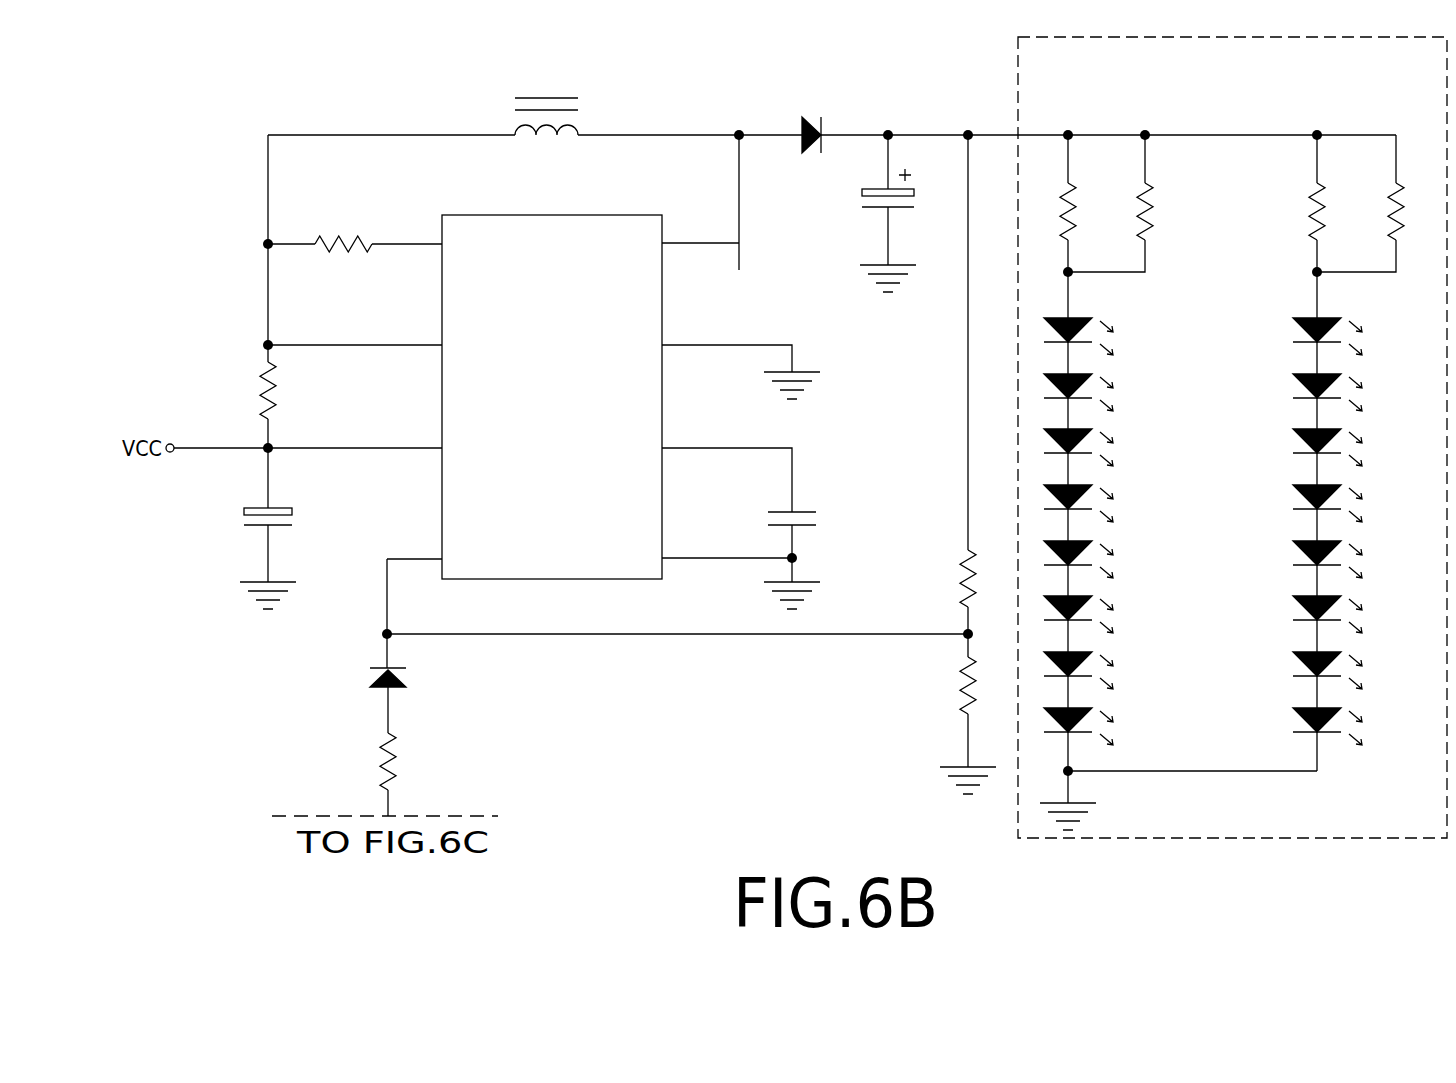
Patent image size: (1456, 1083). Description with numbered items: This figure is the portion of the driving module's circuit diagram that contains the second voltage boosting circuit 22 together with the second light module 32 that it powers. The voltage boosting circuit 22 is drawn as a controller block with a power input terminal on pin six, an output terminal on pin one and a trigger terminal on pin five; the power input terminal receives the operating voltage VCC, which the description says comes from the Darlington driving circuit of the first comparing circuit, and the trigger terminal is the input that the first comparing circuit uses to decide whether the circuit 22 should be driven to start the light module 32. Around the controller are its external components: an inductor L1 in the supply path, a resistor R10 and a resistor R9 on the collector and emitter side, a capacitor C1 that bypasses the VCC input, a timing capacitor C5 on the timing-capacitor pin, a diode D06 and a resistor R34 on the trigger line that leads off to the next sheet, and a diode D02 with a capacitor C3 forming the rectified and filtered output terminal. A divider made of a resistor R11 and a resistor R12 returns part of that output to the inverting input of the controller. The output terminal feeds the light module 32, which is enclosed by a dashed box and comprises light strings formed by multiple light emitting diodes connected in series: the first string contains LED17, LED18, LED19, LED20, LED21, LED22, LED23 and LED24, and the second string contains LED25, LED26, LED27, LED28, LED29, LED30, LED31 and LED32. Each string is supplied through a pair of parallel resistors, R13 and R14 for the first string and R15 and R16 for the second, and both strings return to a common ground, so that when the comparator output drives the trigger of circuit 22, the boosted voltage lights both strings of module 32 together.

The second voltage boosting circuit 22 is at (452, 490).
The second light module 32 is at (1232, 467).
The inductor 220uH L1 is at (548, 83).
The resistor 1R R9 is at (239, 387).
The resistor 180R R10 is at (352, 206).
The capacitor 22u/25V C1 is at (224, 558).
The diode SS1040 D06 is at (431, 690).
The resistor 10K R34 is at (422, 774).
The timing capacitor 1500P C5 is at (829, 521).
The diode SB160 D02 is at (780, 97).
The capacitor 47u/50V C3 is at (913, 175).
The resistor 100K R11 is at (937, 582).
The resistor 4.7K R12 is at (933, 698).
The resistor 150R R13 is at (1056, 150).
The resistor 150R R14 is at (1133, 150).
The resistor 150R R15 is at (1306, 150).
The resistor 150R R16 is at (1383, 150).
The light emitting diode LED17 is at (1113, 336).
The light emitting diode LED18 is at (1113, 392).
The light emitting diode LED19 is at (1113, 447).
The light emitting diode LED20 is at (1113, 503).
The light emitting diode LED21 is at (1113, 559).
The light emitting diode LED22 is at (1113, 614).
The light emitting diode LED23 is at (1113, 670).
The light emitting diode LED24 is at (1113, 726).
The light emitting diode LED25 is at (1363, 336).
The light emitting diode LED26 is at (1363, 392).
The light emitting diode LED27 is at (1363, 447).
The light emitting diode LED28 is at (1363, 503).
The light emitting diode LED29 is at (1363, 559).
The light emitting diode LED30 is at (1363, 614).
The light emitting diode LED31 is at (1363, 670).
The light emitting diode LED32 is at (1363, 726).